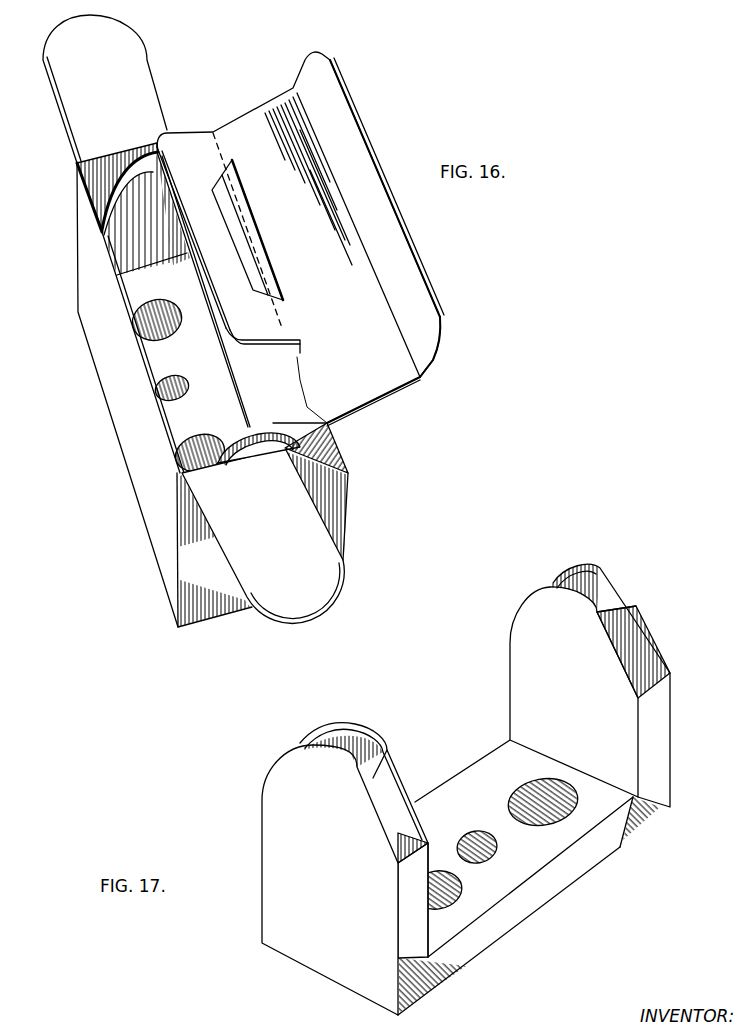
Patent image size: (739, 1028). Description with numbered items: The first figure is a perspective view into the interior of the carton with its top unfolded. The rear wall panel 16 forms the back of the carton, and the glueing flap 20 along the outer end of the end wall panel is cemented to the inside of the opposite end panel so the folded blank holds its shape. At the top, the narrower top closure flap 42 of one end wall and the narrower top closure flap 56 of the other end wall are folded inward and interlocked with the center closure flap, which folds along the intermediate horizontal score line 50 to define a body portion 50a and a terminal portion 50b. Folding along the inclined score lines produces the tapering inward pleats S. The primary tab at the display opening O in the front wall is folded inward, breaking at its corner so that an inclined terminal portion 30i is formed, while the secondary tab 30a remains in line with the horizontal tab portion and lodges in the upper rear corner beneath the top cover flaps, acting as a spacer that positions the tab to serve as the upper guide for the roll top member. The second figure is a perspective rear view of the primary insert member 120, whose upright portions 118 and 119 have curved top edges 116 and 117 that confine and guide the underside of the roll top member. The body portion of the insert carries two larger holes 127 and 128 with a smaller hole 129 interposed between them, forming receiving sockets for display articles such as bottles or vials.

In FIG. 16, the rear wall panel 16 is at (103, 300).
In FIG. 16, the glueing flap 20 is at (82, 187).
In FIG. 16, the top closure flap 42 is at (118, 80).
In FIG. 16, the curved top edge 117 is at (147, 174).
In FIG. 17, the curved top edge 117 is at (318, 727).
In FIG. 16, the curved top edge 116 is at (243, 430).
In FIG. 17, the curved top edge 116 is at (555, 583).
In FIG. 16, the larger hole 127 is at (165, 280).
In FIG. 17, the larger hole 127 is at (443, 903).
In FIG. 16, the larger hole 128 is at (192, 440).
In FIG. 17, the larger hole 128 is at (525, 788).
In FIG. 16, the smaller hole 129 is at (172, 380).
In FIG. 17, the smaller hole 129 is at (475, 833).
In FIG. 16, the top closure flap 56 is at (315, 585).
In FIG. 16, the tapering inward pleats S is at (330, 453).
In FIG. 16, the secondary tab 30a is at (262, 250).
In FIG. 16, the inclined terminal portion 30i is at (244, 230).
In FIG. 16, the intermediate horizontal score line 50 is at (423, 378).
In FIG. 16, the body portion 50a is at (363, 397).
In FIG. 16, the terminal portion 50b is at (430, 333).
In FIG. 16, the display opening O is at (265, 392).
In FIG. 17, the upright portion 118 is at (565, 681).
In FIG. 17, the upright portion 119 is at (322, 863).
In FIG. 17, the primary insert member 120 is at (323, 977).